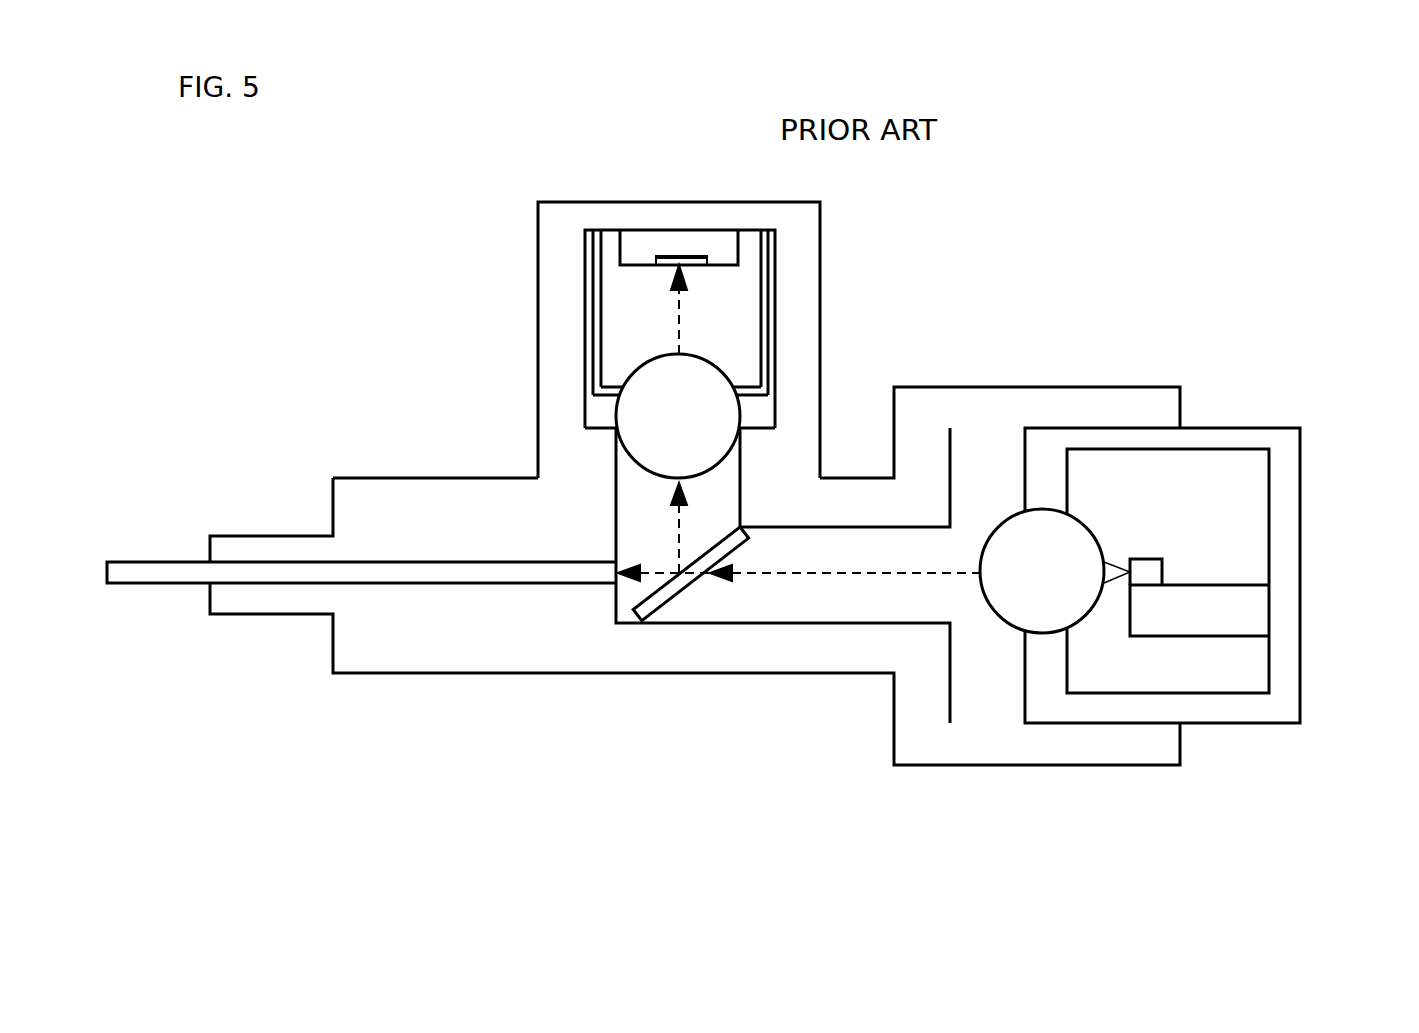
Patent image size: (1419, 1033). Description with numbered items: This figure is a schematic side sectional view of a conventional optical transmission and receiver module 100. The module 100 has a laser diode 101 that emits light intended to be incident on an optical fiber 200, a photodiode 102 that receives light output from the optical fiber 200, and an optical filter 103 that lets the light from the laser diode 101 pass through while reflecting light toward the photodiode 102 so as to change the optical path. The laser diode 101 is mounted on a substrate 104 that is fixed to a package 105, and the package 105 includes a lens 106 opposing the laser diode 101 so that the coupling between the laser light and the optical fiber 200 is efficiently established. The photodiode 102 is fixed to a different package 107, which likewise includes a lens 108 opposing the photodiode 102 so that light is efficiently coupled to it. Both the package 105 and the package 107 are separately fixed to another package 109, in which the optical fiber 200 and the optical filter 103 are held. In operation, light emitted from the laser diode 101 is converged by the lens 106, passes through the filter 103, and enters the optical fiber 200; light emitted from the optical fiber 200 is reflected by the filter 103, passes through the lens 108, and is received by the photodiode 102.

The optical transmission and receiver module 100 is at (690, 718).
The laser diode 101 is at (1152, 570).
The photodiode 102 is at (740, 243).
The optical filter 103 is at (635, 620).
The substrate 104 is at (1253, 612).
The package 105 is at (1288, 675).
The lens 106 is at (1088, 527).
The package 107 is at (560, 382).
The lens 108 is at (728, 378).
The package 109 is at (837, 662).
The optical fiber 200 is at (480, 572).